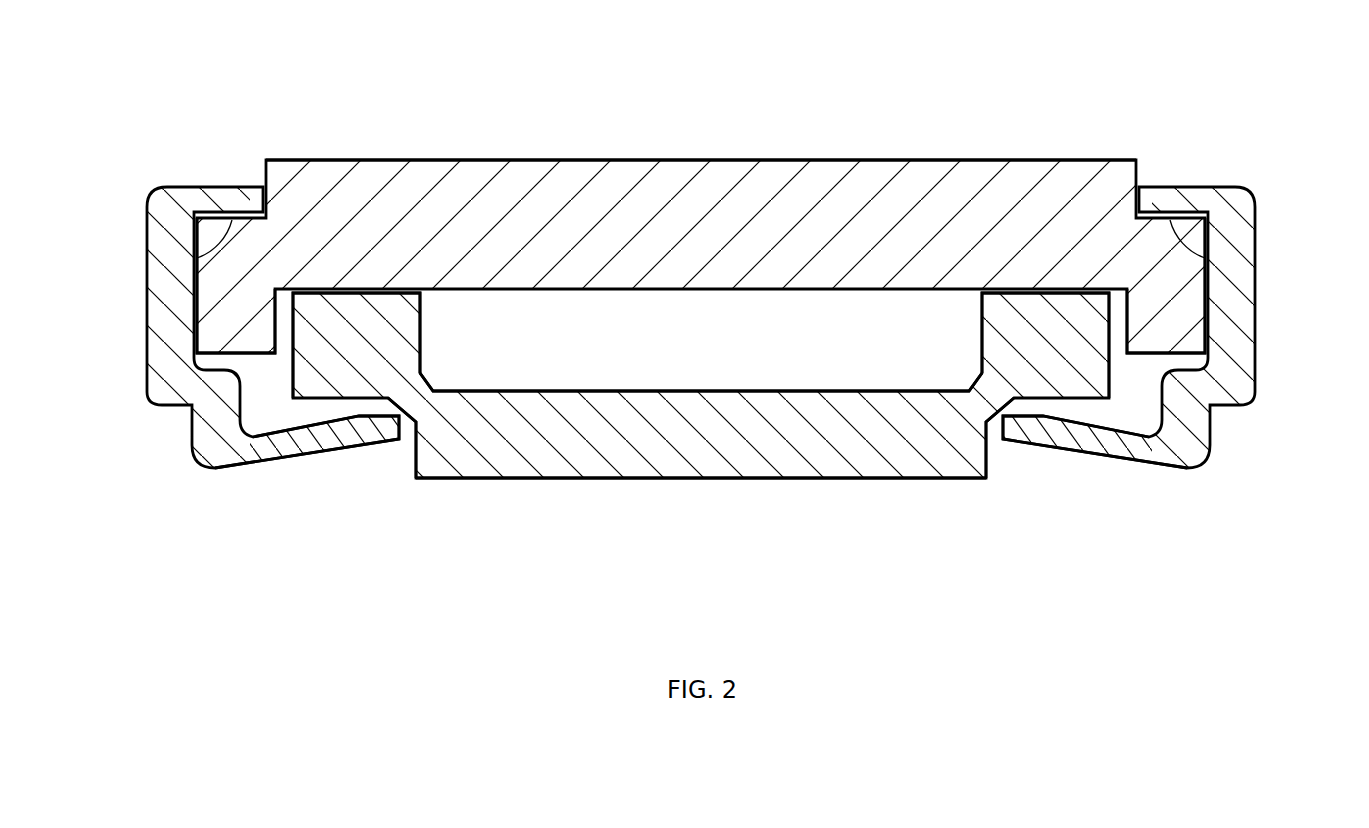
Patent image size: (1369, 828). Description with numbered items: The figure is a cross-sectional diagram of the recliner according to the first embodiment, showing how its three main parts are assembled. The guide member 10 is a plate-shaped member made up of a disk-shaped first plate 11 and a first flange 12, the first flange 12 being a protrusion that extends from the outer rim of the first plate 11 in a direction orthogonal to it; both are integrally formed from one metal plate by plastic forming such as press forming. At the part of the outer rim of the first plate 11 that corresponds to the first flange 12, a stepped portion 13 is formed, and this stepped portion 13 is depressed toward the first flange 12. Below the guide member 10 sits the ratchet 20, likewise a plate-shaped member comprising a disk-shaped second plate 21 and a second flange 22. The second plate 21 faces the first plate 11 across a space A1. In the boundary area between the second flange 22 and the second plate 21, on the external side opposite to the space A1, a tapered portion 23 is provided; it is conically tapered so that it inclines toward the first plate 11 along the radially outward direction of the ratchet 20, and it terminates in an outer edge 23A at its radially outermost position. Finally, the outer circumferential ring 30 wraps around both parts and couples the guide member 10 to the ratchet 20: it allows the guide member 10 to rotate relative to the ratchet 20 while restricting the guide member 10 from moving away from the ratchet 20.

The guide member 10 is at (985, 155).
The first plate 11 is at (597, 158).
The first flange 12 is at (264, 362).
The stepped portion 13 is at (220, 243).
The ratchet 20 is at (801, 479).
The second plate 21 is at (640, 468).
The second flange 22 is at (423, 330).
The tapered portion 23 is at (407, 411).
The outer edge 23A is at (387, 400).
The outer circumferential ring 30 is at (146, 219).
The space A1 is at (732, 360).